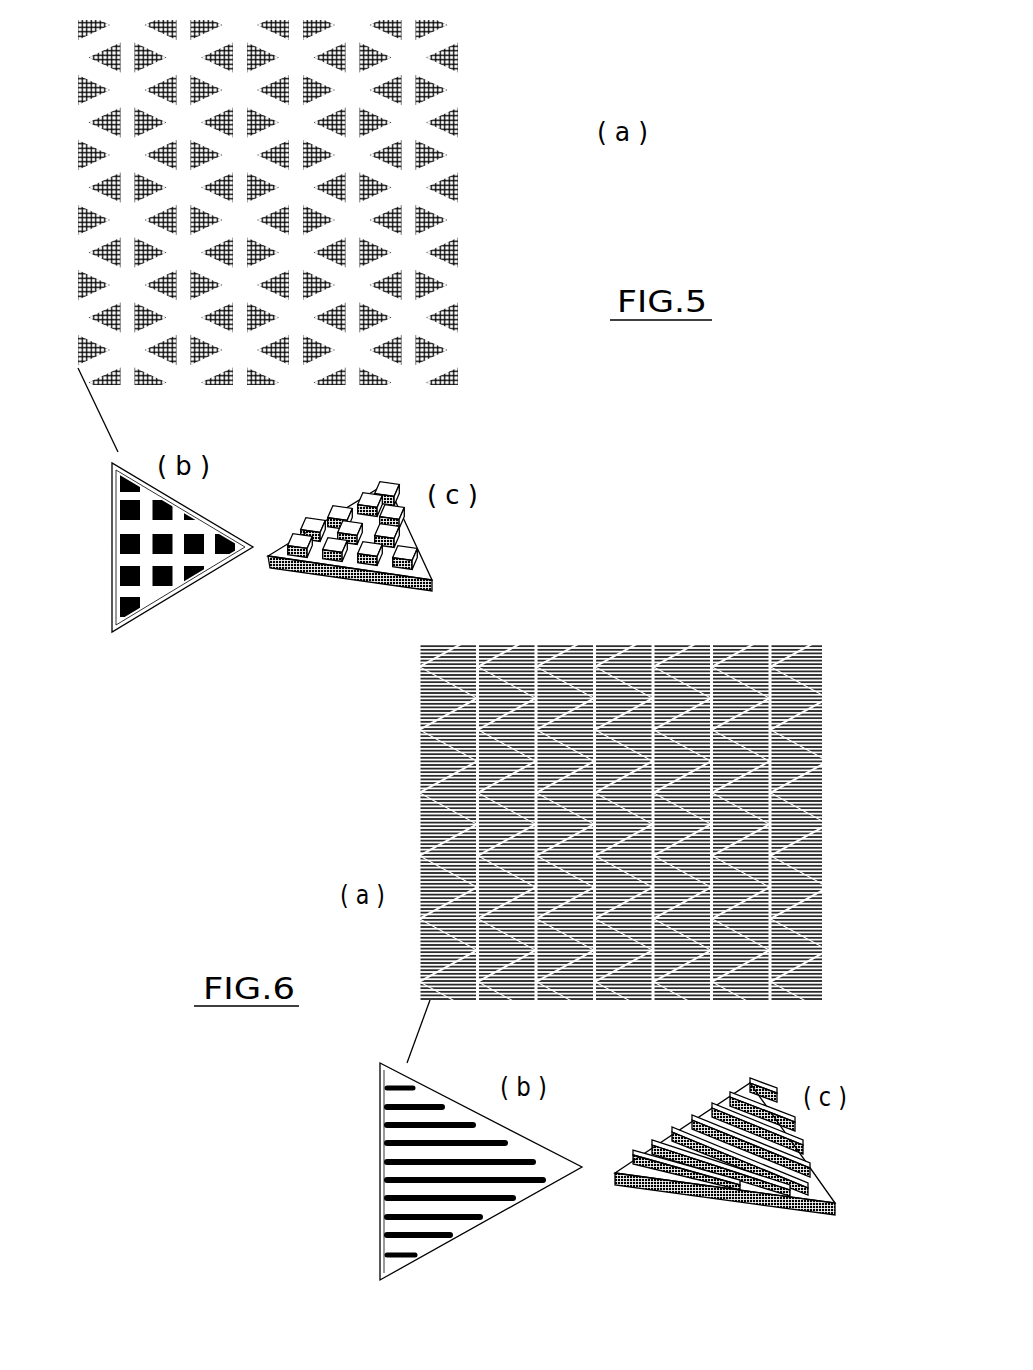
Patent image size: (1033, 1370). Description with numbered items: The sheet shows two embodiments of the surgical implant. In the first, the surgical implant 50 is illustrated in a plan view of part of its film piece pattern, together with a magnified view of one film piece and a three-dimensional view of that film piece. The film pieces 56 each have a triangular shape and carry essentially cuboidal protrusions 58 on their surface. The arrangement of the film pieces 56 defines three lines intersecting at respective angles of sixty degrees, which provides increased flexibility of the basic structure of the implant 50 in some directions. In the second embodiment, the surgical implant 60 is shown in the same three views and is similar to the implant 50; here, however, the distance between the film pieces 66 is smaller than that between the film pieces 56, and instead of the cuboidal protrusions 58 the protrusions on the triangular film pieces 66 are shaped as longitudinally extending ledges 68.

In FIG. 5, the surgical implant 50 is at (492, 92).
In FIG. 5, the film piece 56 is at (460, 263).
In FIG. 5, the square protrusion elements 58 is at (109, 580).
In FIG. 6, the surgical implant 60 is at (699, 635).
In FIG. 6, the film piece 66 is at (415, 830).
In FIG. 6, the ledge 68 is at (497, 1200).